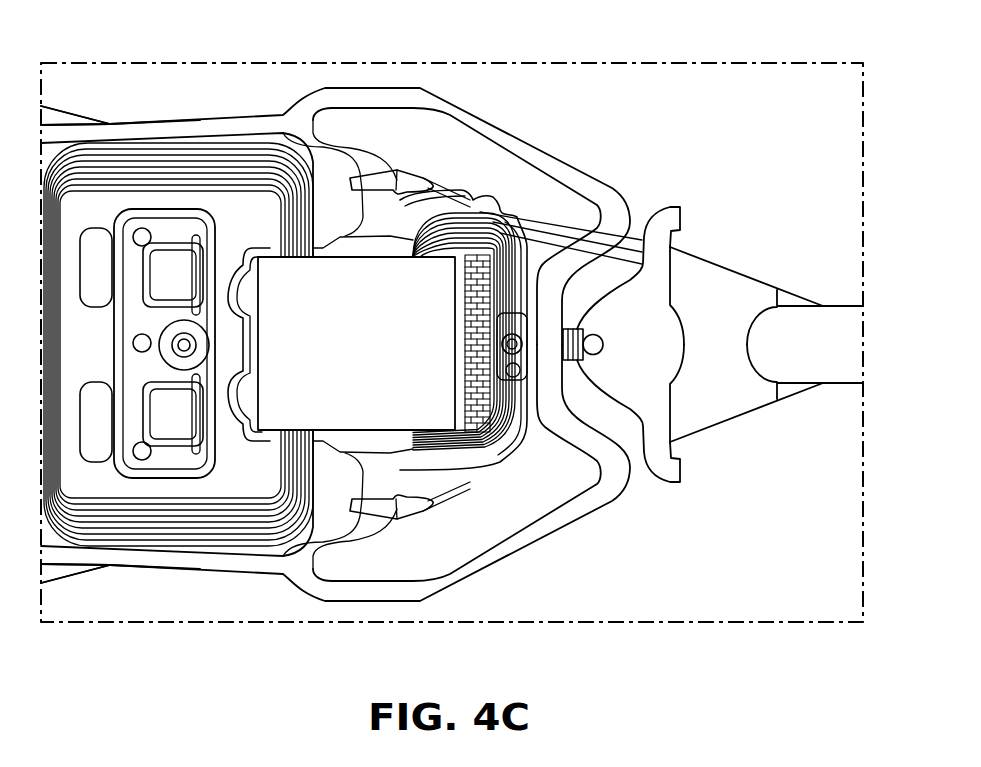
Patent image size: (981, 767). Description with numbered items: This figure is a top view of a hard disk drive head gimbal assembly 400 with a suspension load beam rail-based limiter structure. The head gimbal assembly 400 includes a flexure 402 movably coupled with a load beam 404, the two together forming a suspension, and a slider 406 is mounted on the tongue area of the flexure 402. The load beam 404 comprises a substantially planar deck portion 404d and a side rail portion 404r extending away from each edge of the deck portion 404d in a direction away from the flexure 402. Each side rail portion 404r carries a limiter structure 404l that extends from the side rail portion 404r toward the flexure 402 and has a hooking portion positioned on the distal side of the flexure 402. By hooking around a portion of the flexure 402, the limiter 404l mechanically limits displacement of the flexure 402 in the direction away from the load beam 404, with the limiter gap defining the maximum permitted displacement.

The head gimbal assembly 400 is at (150, 42).
The flexure 402 is at (180, 566).
The load beam 404 is at (712, 272).
The deck portion 404d is at (593, 280).
The limiter structure 404l is at (412, 513).
The side rail portion 404r is at (65, 118).
The slider 406 is at (362, 324).